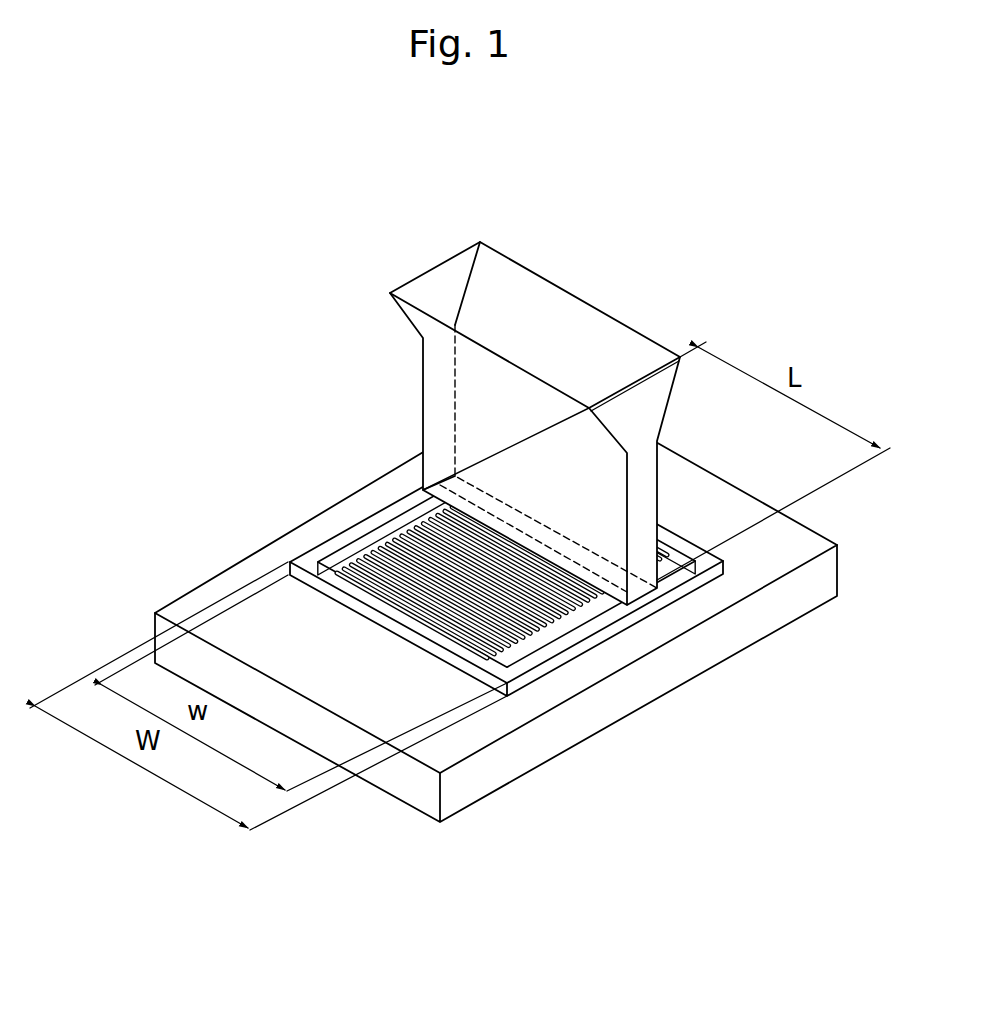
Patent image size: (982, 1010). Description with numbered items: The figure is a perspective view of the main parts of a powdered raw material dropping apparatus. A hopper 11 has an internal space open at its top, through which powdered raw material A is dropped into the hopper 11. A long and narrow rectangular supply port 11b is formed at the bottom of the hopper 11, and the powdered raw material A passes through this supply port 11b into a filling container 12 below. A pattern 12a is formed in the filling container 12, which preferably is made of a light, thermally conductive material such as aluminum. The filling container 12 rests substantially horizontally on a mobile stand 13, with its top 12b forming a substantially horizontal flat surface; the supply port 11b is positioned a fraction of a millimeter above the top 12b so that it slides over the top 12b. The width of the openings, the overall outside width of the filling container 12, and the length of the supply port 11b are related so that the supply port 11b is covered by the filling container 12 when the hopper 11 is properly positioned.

The powdered raw material A is at (543, 413).
The hopper 11 is at (543, 423).
The supply port 11b is at (452, 477).
The filling container 12 is at (572, 606).
The pattern 12a is at (387, 553).
The top 12b is at (692, 568).
The mobile stand 13 is at (786, 545).